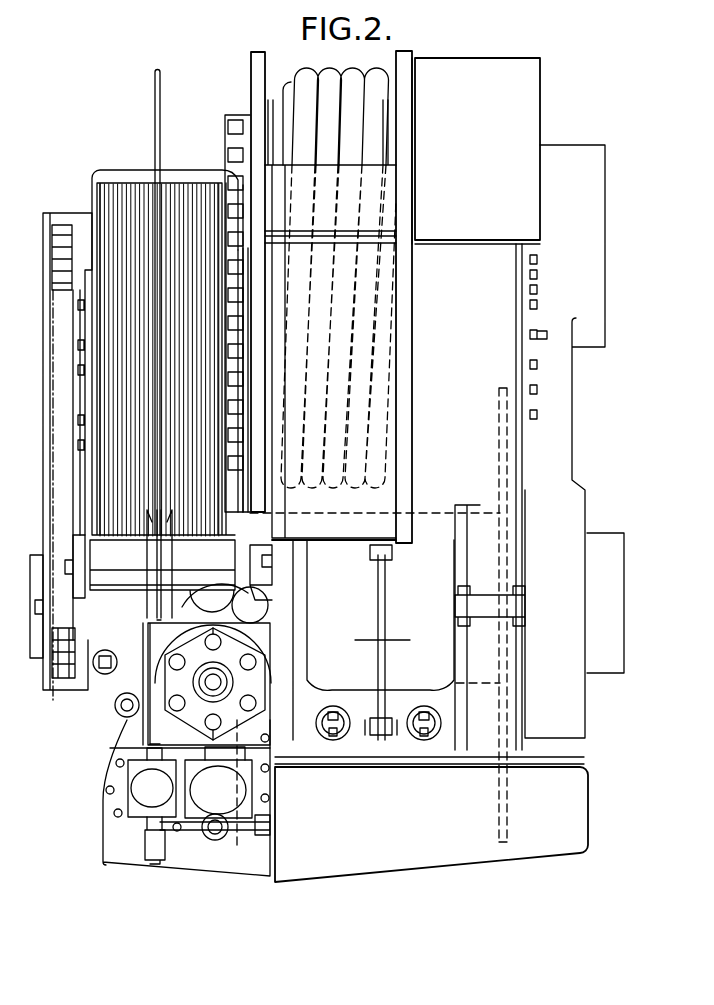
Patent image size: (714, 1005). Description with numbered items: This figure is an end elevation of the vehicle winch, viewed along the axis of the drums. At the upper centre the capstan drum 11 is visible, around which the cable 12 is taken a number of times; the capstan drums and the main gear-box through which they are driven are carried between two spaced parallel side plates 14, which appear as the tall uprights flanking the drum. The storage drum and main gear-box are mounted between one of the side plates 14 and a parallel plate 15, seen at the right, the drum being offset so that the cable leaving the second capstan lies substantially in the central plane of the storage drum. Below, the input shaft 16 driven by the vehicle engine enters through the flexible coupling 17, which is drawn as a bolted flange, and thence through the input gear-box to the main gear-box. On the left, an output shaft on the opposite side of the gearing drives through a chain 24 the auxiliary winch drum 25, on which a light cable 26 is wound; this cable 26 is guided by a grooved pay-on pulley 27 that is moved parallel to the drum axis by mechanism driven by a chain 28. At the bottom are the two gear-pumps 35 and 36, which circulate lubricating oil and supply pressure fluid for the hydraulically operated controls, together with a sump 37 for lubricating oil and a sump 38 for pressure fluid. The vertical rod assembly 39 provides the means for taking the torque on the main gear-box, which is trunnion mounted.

The capstan drum 11 is at (289, 85).
The cable 12 is at (322, 82).
The side plates 14 is at (251, 62).
The parallel plate 15 is at (520, 436).
The input shaft 16 is at (223, 684).
The flexible coupling 17 is at (192, 653).
The chain 24 is at (62, 680).
The auxiliary winch drum 25 is at (100, 193).
The light cable 26 is at (155, 88).
The grooved pay-on pulley 27 is at (147, 553).
The chain 28 is at (250, 519).
The gear-pump 35 is at (262, 787).
The gear-pump 36 is at (143, 790).
The sump 37 is at (408, 862).
The sump 38 is at (245, 867).
The torque-taking means 39 is at (387, 593).